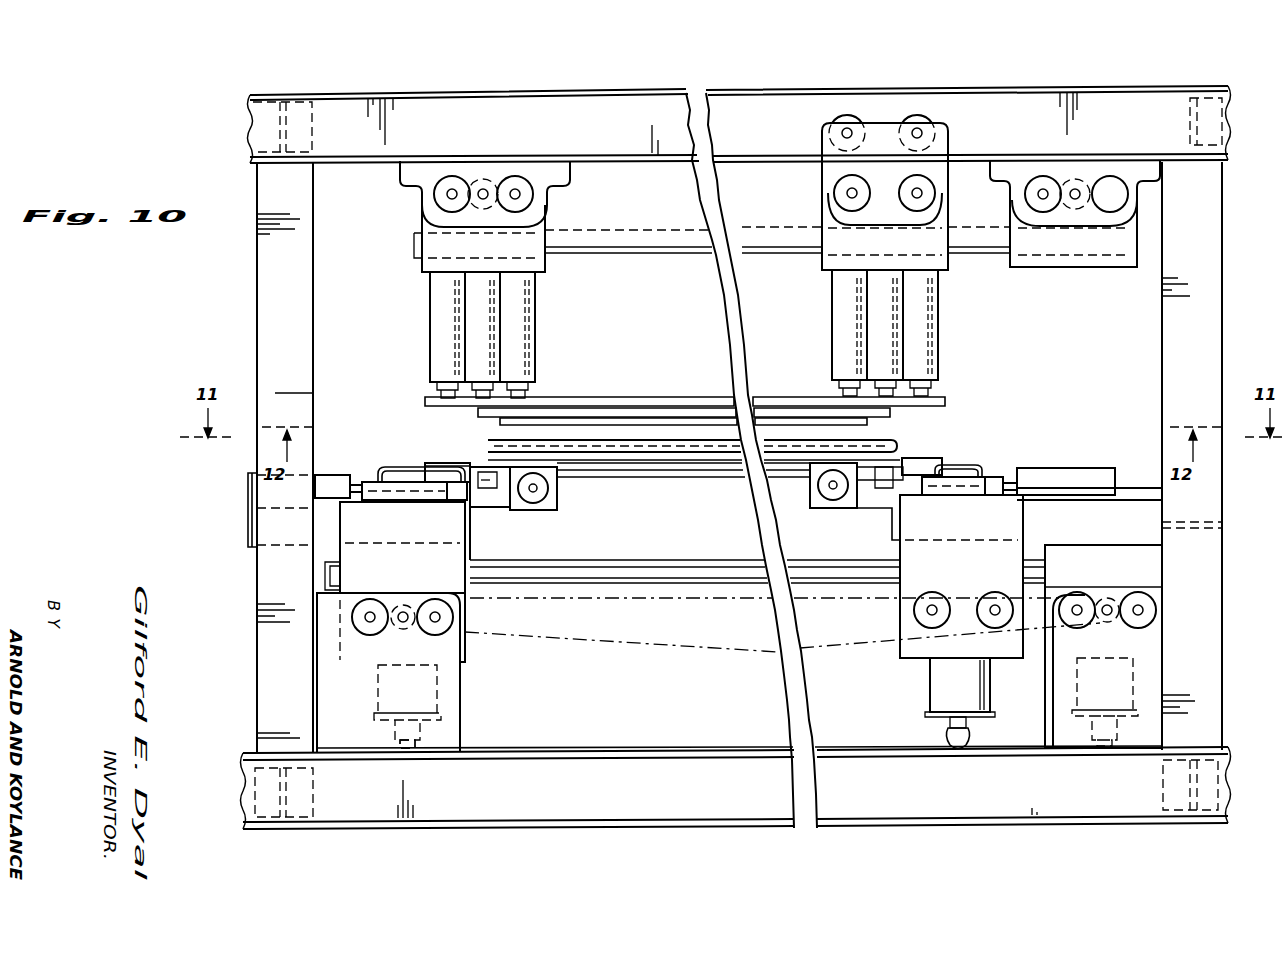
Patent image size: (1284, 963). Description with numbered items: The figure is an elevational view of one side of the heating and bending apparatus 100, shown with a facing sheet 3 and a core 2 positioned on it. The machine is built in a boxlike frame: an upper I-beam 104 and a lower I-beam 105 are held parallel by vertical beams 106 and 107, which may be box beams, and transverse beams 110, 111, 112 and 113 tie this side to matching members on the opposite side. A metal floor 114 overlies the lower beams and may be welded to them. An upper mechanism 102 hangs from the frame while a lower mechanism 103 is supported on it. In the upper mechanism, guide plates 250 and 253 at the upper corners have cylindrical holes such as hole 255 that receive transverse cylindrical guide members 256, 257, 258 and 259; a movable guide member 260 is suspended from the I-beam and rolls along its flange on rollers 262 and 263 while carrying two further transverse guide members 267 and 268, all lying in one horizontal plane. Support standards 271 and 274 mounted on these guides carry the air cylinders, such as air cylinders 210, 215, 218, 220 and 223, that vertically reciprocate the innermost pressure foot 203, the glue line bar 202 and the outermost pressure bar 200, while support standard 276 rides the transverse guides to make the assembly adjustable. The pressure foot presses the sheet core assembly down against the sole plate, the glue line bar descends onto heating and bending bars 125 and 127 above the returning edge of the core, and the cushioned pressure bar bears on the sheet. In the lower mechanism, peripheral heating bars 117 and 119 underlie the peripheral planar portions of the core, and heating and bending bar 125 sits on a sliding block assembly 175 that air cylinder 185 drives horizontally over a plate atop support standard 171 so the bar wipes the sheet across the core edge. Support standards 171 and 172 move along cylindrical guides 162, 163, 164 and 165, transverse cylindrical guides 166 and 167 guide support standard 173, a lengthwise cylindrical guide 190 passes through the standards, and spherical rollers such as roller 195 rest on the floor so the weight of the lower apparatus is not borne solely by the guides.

The core 2 is at (694, 487).
The sheet 3 is at (447, 447).
The heating and bending apparatus 100 is at (1254, 181).
The upper mechanism 102 is at (1022, 309).
The lower mechanism 103 is at (1128, 442).
The upper I-beam 104 is at (739, 110).
The lower I-beam 105 is at (736, 807).
The beam 106 is at (252, 458).
The beam 107 is at (1214, 456).
The transverse beam 110 is at (303, 792).
The transverse beam 111 is at (1173, 785).
The transverse beam 112 is at (1197, 92).
The transverse beam 113 is at (286, 96).
The floor 114 is at (739, 727).
The peripheral heating bar 117 is at (507, 464).
The peripheral heating bar 119 is at (856, 510).
The heating and bending bar 125 is at (434, 448).
The heating and bending bar 127 is at (939, 457).
The cylindrical guide 162 is at (391, 627).
The cylindrical guide 163 is at (413, 628).
The cylindrical guide 164 is at (894, 610).
The cylindrical guide 165 is at (995, 591).
The transverse cylindrical guide 166 is at (1077, 591).
The transverse cylindrical guide 167 is at (1164, 607).
The support standard 171 is at (492, 590).
The support standard 172 is at (930, 606).
The support standard 173 is at (1127, 646).
The sliding block assembly 175 is at (677, 462).
The air cylinder 185 is at (738, 451).
The lengthwise cylindrical guide 190 is at (782, 586).
The spherical roller 195 is at (685, 753).
The pressure bar 200 is at (727, 390).
The glue line bar 202 is at (753, 406).
The pressure foot 203 is at (764, 424).
The air cylinder 210 is at (556, 335).
The air cylinder 215 is at (432, 335).
The air cylinder 218 is at (836, 333).
The air cylinder 220 is at (414, 335).
The air cylinder 223 is at (944, 333).
The guide plate 250 is at (416, 194).
The guide plate 253 is at (1075, 160).
The cylindrical hole 255 is at (556, 194).
The transverse cylindrical guide member 256 is at (401, 197).
The transverse cylindrical guide member 257 is at (552, 196).
The transverse cylindrical guide member 258 is at (1028, 165).
The transverse cylindrical guide member 259 is at (1149, 195).
The movable guide member 260 is at (876, 230).
The roller 262 is at (845, 104).
The roller 263 is at (927, 99).
The transverse cylindrical guide member 267 is at (811, 192).
The transverse cylindrical guide member 268 is at (946, 199).
The support standard 271 is at (563, 243).
The support standard 274 is at (847, 260).
The support standard 276 is at (1074, 253).